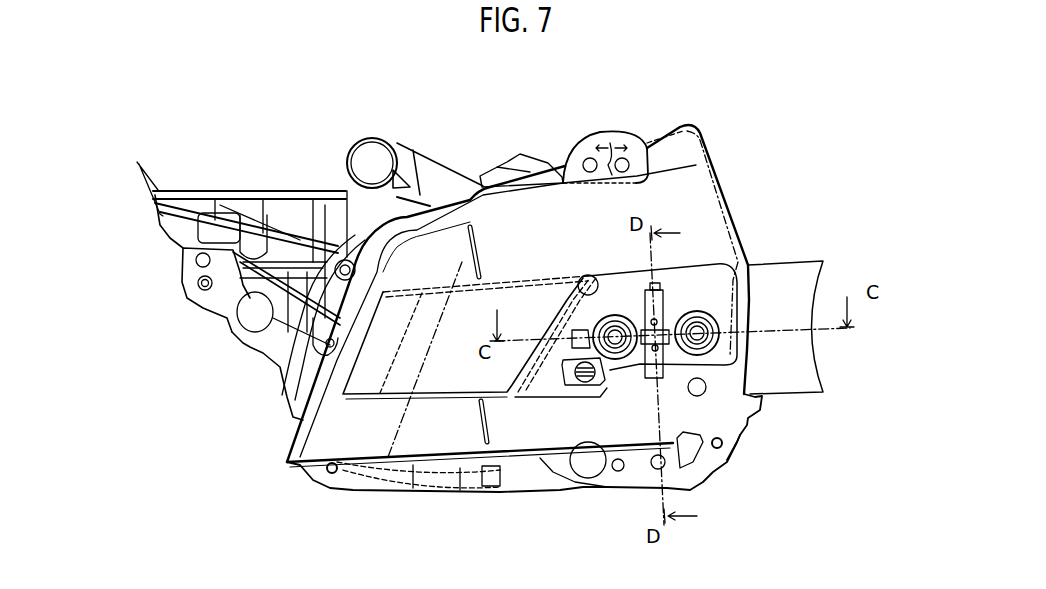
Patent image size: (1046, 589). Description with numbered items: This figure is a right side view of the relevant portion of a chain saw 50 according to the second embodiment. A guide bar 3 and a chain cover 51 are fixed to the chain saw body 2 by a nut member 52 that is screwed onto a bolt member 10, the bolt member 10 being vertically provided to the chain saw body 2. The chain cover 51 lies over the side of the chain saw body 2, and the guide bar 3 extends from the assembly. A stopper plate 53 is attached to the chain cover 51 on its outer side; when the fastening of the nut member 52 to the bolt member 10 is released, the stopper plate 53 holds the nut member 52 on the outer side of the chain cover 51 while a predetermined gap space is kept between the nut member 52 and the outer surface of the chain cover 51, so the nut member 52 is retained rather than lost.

The chain saw body 2 is at (418, 165).
The guide bar 3 is at (797, 277).
The bolt member 10 is at (700, 336).
The chain saw 50 is at (703, 69).
The chain cover 51 is at (696, 203).
The nut member 52 is at (603, 322).
The stopper plate 53 is at (668, 377).